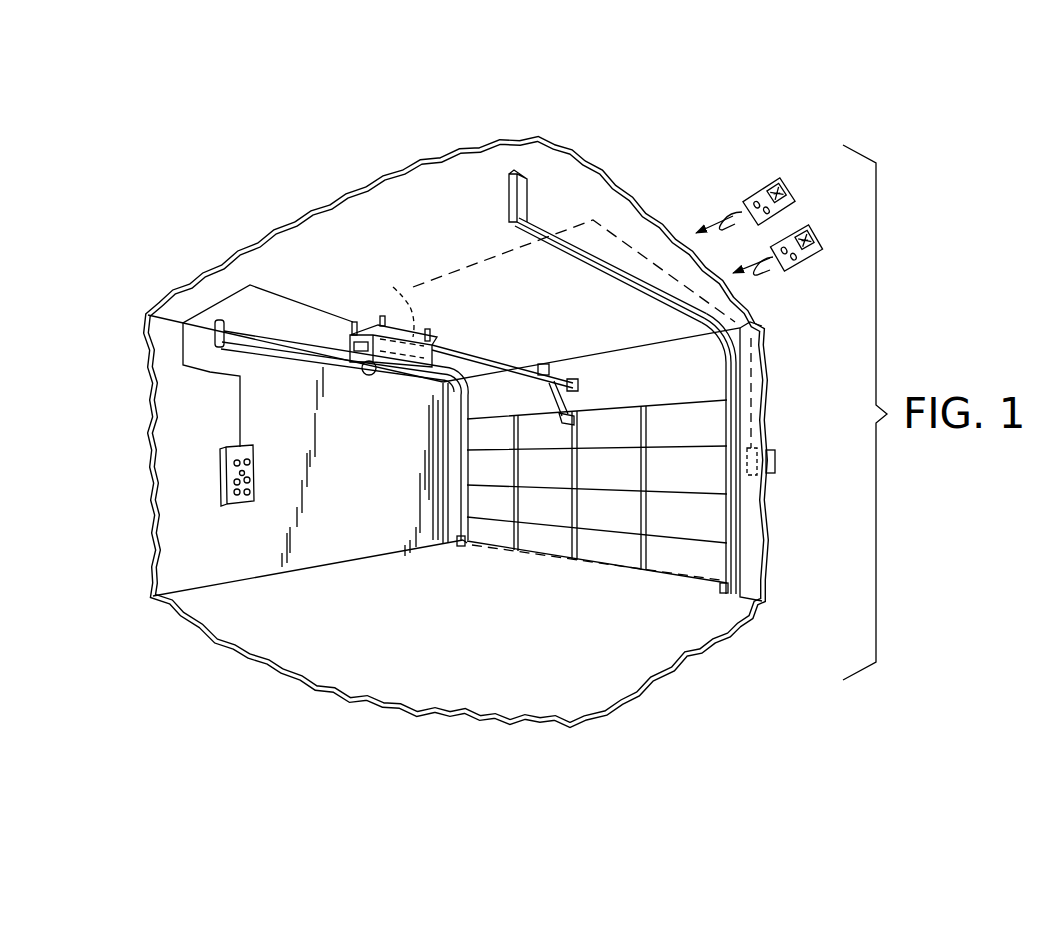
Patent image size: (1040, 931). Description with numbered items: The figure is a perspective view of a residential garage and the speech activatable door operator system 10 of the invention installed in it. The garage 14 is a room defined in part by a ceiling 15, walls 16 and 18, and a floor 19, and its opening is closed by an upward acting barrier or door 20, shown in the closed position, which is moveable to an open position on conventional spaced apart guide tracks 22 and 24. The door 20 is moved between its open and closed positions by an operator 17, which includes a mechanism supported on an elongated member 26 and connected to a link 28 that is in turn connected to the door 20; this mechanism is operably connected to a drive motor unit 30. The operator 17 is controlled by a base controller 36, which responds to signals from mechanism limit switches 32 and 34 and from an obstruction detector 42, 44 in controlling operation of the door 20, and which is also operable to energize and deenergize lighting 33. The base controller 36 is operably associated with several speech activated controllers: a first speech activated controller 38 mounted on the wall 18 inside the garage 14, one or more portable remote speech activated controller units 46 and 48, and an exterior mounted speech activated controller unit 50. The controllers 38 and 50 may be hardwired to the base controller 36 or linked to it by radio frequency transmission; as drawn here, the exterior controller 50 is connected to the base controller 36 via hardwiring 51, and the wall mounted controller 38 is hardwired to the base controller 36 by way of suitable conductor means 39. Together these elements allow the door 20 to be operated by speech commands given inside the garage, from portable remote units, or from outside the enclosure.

The speech activatable door operator system 10 is at (393, 577).
The garage 14 is at (528, 126).
The ceiling 15 is at (343, 188).
The wall 16 is at (763, 507).
The operator 17 is at (437, 372).
The wall 18 is at (156, 432).
The floor 19 is at (540, 704).
The door 20 is at (606, 551).
The guide track 22 is at (277, 362).
The guide track 24 is at (607, 283).
The elongated member 26 is at (477, 360).
The link 28 is at (548, 403).
The drive motor unit 30 is at (397, 363).
The mechanism limit switch 32 is at (436, 331).
The lighting 33 is at (367, 376).
The mechanism limit switch 34 is at (545, 364).
The base controller 36 is at (393, 287).
The first speech activated controller 38 is at (224, 473).
The conductor means 39 is at (213, 377).
The obstruction detector 42 is at (458, 549).
The obstruction detector 44 is at (720, 588).
The portable remote speech activated controller unit 46 is at (764, 182).
The portable remote speech activated controller unit 48 is at (809, 262).
The exterior mounted speech activated controller unit 50 is at (778, 461).
The hardwiring 51 is at (753, 370).